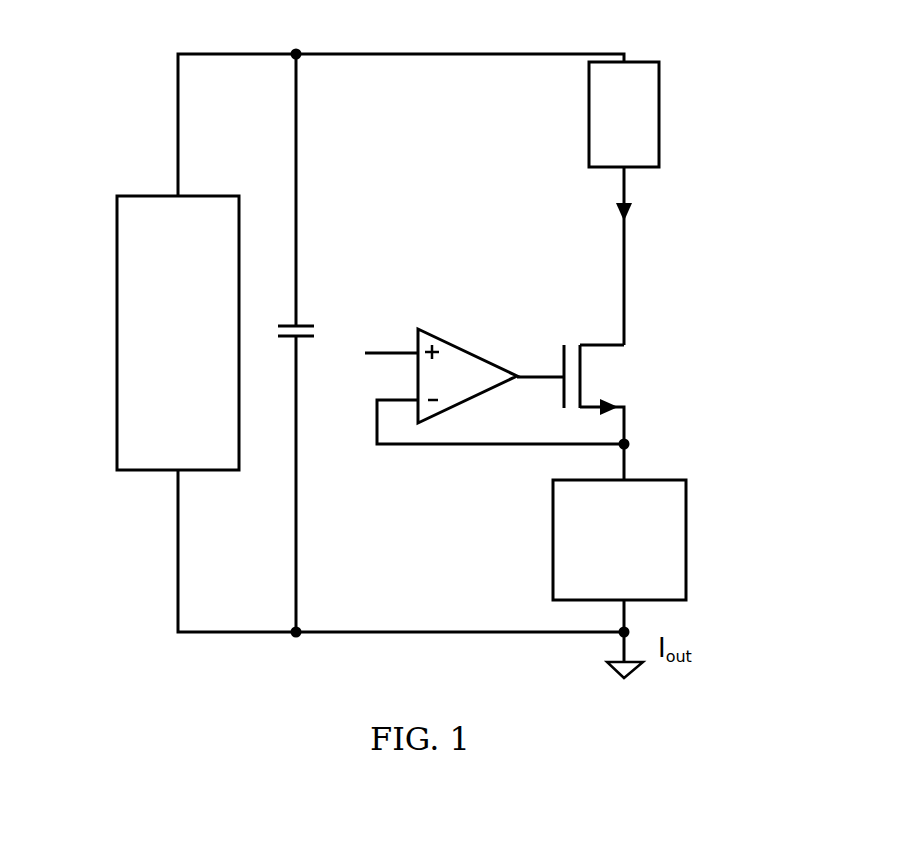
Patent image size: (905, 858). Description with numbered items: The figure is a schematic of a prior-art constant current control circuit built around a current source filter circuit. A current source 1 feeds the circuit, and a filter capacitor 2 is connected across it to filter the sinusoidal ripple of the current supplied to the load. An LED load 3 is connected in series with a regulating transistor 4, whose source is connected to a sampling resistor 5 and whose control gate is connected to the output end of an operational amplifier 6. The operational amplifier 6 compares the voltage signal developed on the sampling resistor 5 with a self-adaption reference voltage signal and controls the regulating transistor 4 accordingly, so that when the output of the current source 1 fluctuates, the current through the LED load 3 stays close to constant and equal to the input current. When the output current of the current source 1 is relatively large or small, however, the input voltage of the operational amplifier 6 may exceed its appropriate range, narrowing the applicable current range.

The current source 1 is at (150, 195).
The filter capacitor 2 is at (318, 305).
The LED load 3 is at (659, 115).
The regulating transistor 4 is at (623, 372).
The sampling resistor 5 is at (686, 532).
The operational amplifier 6 is at (452, 332).